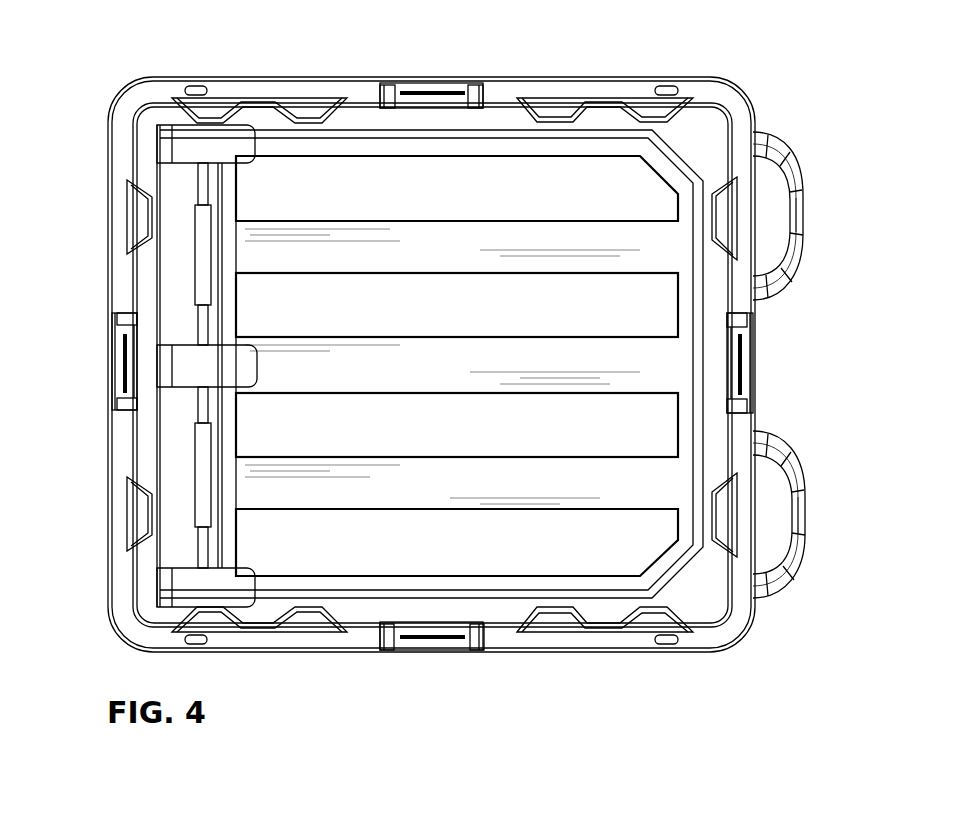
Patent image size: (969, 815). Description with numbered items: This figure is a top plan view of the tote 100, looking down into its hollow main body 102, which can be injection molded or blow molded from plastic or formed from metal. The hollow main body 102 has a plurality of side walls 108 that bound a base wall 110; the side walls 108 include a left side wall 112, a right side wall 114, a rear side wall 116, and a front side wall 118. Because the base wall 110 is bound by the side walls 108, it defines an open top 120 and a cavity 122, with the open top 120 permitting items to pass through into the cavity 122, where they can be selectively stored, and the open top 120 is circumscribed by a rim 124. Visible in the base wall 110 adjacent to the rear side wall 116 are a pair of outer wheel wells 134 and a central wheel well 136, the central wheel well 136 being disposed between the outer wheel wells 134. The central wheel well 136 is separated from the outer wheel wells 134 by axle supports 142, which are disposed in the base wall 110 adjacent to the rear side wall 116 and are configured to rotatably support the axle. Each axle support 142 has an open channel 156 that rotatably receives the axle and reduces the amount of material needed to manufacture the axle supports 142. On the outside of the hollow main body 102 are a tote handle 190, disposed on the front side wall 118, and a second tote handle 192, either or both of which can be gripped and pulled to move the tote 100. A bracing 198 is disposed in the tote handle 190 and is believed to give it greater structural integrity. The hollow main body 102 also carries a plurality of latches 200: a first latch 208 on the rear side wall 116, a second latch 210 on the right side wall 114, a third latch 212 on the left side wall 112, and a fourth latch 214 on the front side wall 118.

The tote 100 is at (86, 71).
The hollow main body 102 is at (707, 69).
The plurality of side walls 108 is at (453, 342).
The base wall 110 is at (543, 357).
The left side wall 112 is at (530, 654).
The right side wall 114 is at (540, 80).
The rear side wall 116 is at (110, 252).
The front side wall 118 is at (753, 415).
The open top 120 is at (380, 146).
The cavity 122 is at (688, 586).
The rim 124 is at (165, 59).
The pair of outer wheel wells 134 is at (240, 150).
The central wheel well 136 is at (243, 362).
The axle supports 142 is at (163, 270).
The open channel 156 is at (207, 245).
The tote handle 190 is at (802, 554).
The second tote handle 192 is at (806, 178).
The bracing 198 is at (803, 224).
The plurality of latches 200 is at (449, 342).
The first latch 208 is at (110, 378).
The second latch 210 is at (432, 82).
The third latch 212 is at (453, 653).
The fourth latch 214 is at (753, 357).